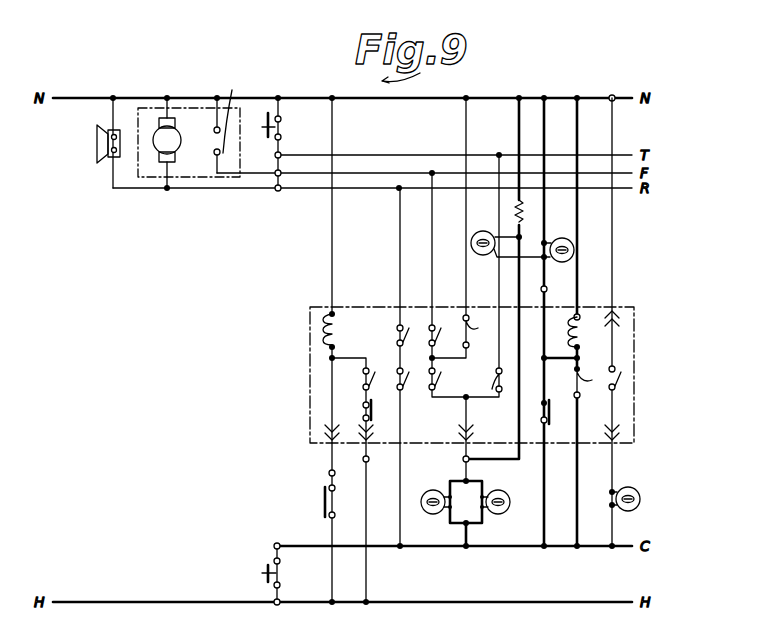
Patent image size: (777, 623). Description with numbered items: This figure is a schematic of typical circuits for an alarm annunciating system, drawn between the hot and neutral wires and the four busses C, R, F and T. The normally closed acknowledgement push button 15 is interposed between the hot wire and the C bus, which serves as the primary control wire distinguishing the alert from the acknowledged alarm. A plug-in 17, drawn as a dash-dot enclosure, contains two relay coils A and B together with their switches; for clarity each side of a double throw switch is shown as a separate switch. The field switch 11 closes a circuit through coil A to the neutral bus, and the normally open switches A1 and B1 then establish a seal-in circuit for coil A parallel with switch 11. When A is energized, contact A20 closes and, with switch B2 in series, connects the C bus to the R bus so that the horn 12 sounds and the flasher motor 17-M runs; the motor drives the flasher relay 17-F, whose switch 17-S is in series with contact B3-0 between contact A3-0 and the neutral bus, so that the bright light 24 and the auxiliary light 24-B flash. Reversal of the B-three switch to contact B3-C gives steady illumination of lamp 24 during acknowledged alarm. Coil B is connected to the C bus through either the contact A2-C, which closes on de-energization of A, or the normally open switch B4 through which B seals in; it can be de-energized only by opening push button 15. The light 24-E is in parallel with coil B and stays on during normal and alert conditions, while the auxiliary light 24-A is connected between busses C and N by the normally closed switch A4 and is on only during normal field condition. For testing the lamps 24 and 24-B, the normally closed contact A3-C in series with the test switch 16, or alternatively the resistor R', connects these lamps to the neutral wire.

The horn 12 is at (97, 144).
The flasher relay 17-F is at (185, 180).
The flasher motor 17-M is at (160, 165).
The switch of flasher relay 17-S is at (236, 123).
The test switch 16 is at (264, 128).
The resistor R' is at (513, 220).
The auxiliary light 24-B is at (483, 231).
The light 24-E is at (560, 238).
The plug-in 17 is at (635, 380).
The relay coil A is at (336, 334).
The relay coil B is at (581, 336).
The switch A-1 A1 is at (375, 373).
The switch B-1 B1 is at (376, 416).
The switch B-2 B2 is at (408, 330).
The switch contact A-2-0 A20 is at (412, 373).
The switch contact B-3-0 B3-0 is at (446, 336).
The switch contact B-3-C B3-C is at (481, 331).
The switch contact A-3-0 A3-0 is at (464, 378).
The switch contact A-3-C A3-C is at (484, 380).
The switch contact A-2-C A2-C is at (592, 377).
The switch B-4 B4 is at (554, 412).
The switch A-4 A4 is at (620, 372).
The field switch 11 is at (322, 503).
The acknowledgement push button 15 is at (266, 573).
The bright light 24 is at (427, 493).
The auxiliary light 24-A is at (641, 498).